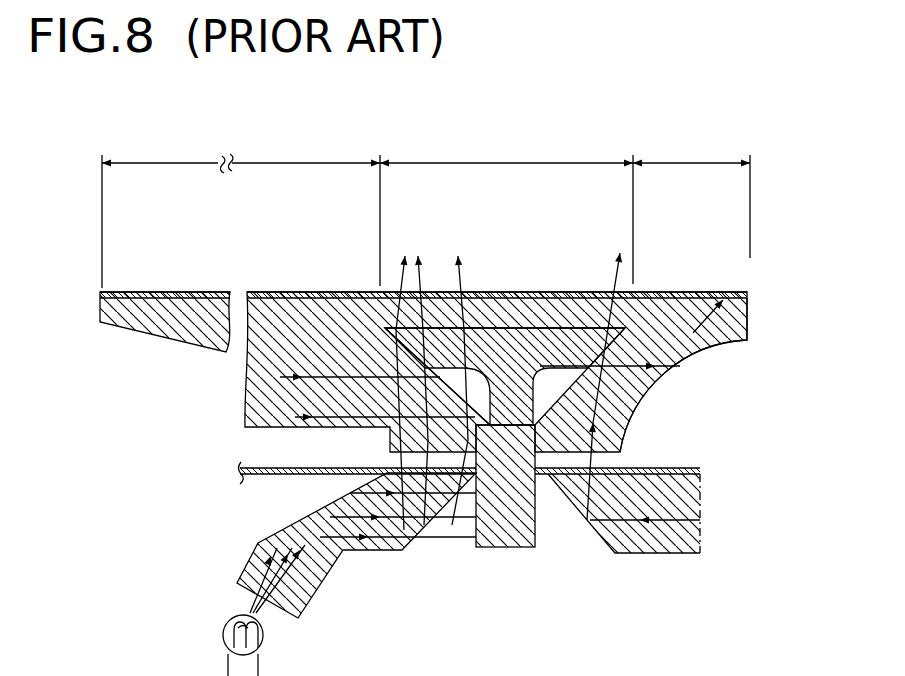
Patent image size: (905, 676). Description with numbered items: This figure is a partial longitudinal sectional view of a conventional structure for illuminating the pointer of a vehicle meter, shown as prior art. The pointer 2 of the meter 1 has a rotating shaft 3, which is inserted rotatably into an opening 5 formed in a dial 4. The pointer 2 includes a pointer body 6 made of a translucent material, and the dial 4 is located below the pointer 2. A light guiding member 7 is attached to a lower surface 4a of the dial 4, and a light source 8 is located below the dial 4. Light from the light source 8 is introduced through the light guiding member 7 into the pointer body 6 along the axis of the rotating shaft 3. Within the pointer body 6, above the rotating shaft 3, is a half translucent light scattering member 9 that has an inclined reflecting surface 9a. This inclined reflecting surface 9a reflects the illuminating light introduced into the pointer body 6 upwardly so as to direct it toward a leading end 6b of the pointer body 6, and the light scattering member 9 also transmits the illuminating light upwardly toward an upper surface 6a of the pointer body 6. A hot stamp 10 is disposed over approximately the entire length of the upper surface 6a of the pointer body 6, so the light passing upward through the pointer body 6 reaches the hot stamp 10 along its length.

The meter 1 is at (436, 407).
The pointer 2 is at (750, 288).
The rotating shaft 3 is at (532, 517).
The dial 4 is at (672, 464).
The lower surface 4a is at (305, 475).
The opening 5 is at (607, 477).
The pointer body 6 is at (278, 327).
The upper surface 6a is at (660, 293).
The leading end 6b is at (100, 295).
The light guiding member 7 is at (262, 578).
The light source 8 is at (222, 638).
The light scattering member 9 is at (519, 345).
The inclined reflecting surface 9a is at (392, 365).
The hot stamp 10 is at (497, 293).